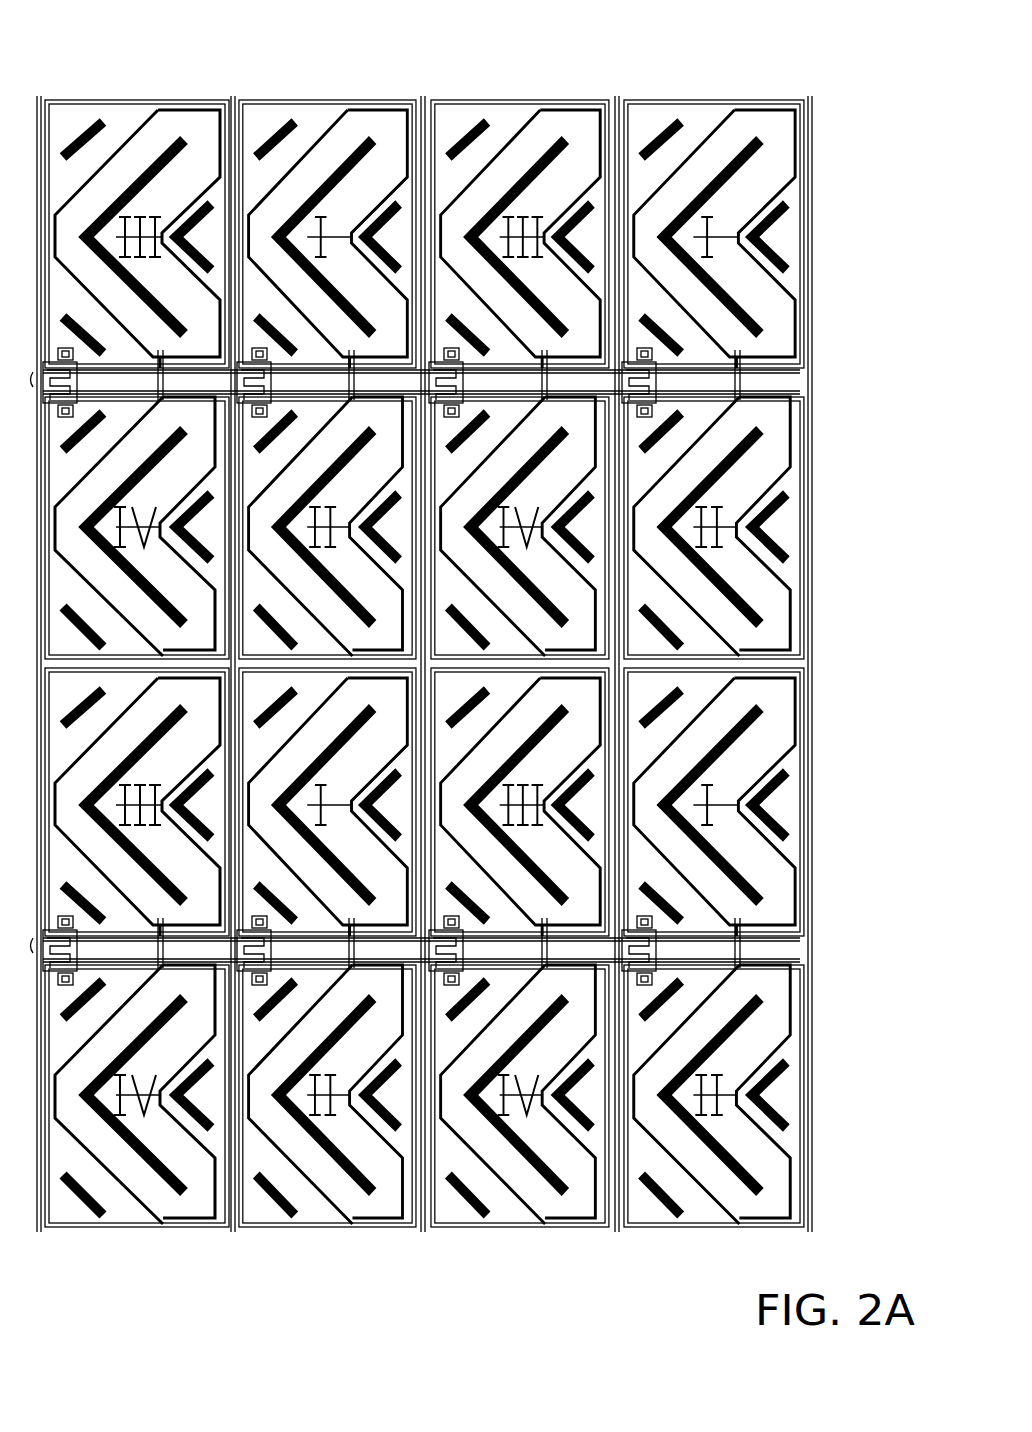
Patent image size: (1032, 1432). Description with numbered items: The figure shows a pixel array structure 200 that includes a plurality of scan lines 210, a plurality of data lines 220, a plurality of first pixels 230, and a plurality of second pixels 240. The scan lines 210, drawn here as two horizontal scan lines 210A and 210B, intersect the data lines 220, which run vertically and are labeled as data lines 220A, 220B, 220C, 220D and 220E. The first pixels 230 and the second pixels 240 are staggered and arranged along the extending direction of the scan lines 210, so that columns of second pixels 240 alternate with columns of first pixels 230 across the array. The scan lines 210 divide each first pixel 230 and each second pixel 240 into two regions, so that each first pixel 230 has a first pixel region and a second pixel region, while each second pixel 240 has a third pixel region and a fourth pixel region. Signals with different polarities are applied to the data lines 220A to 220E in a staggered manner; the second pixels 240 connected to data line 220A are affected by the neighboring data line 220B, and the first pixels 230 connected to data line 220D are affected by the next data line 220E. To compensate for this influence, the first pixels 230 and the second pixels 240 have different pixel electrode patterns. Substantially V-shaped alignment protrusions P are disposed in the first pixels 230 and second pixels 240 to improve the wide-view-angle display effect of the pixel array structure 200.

The pixel array structure 200 is at (481, 662).
The scan lines 210 is at (873, 372).
The scan line 210A is at (795, 384).
The scan line 210B is at (795, 952).
The data lines 220 is at (65, 41).
The data line 220A is at (44, 97).
The data line 220B is at (235, 97).
The data line 220C is at (425, 97).
The data line 220D is at (618, 97).
The data line 220E is at (811, 97).
The first pixels 230 is at (321, 1256).
The second pixels 240 is at (119, 1256).
The alignment protrusions P is at (778, 222).